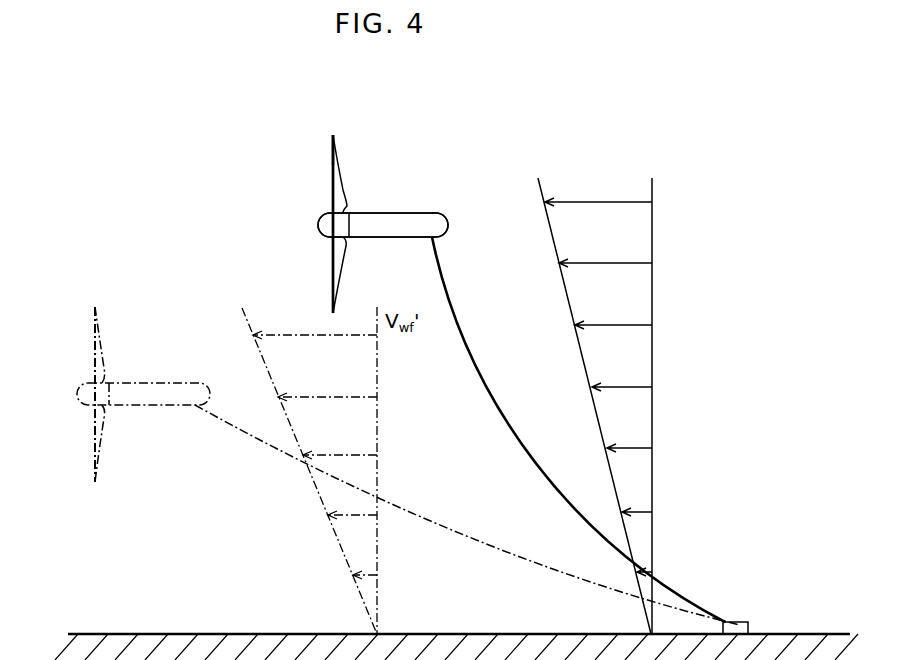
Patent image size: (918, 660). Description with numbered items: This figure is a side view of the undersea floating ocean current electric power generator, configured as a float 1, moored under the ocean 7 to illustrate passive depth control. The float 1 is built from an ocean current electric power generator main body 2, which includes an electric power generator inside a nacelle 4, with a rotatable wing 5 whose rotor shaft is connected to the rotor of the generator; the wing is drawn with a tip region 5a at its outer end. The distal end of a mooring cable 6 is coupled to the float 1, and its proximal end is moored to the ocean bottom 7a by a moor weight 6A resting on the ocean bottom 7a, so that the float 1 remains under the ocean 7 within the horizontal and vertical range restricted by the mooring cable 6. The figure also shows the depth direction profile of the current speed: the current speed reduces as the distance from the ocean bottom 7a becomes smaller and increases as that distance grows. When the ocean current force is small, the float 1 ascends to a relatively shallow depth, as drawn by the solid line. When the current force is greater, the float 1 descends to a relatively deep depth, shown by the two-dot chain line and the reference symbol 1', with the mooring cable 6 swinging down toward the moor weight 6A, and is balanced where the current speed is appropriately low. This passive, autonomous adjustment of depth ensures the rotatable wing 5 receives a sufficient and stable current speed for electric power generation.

The float 1 is at (383, 221).
The float in descended state 1' is at (143, 388).
The ocean current electric power generator main body 2 is at (429, 206).
The nacelle 4 is at (396, 230).
The rotatable wing 5 is at (318, 187).
The blade tip 5a is at (332, 155).
The mooring cable 6 is at (501, 420).
The moor weight 6A is at (740, 622).
The ocean 7 is at (704, 468).
The ocean bottom 7a is at (210, 632).